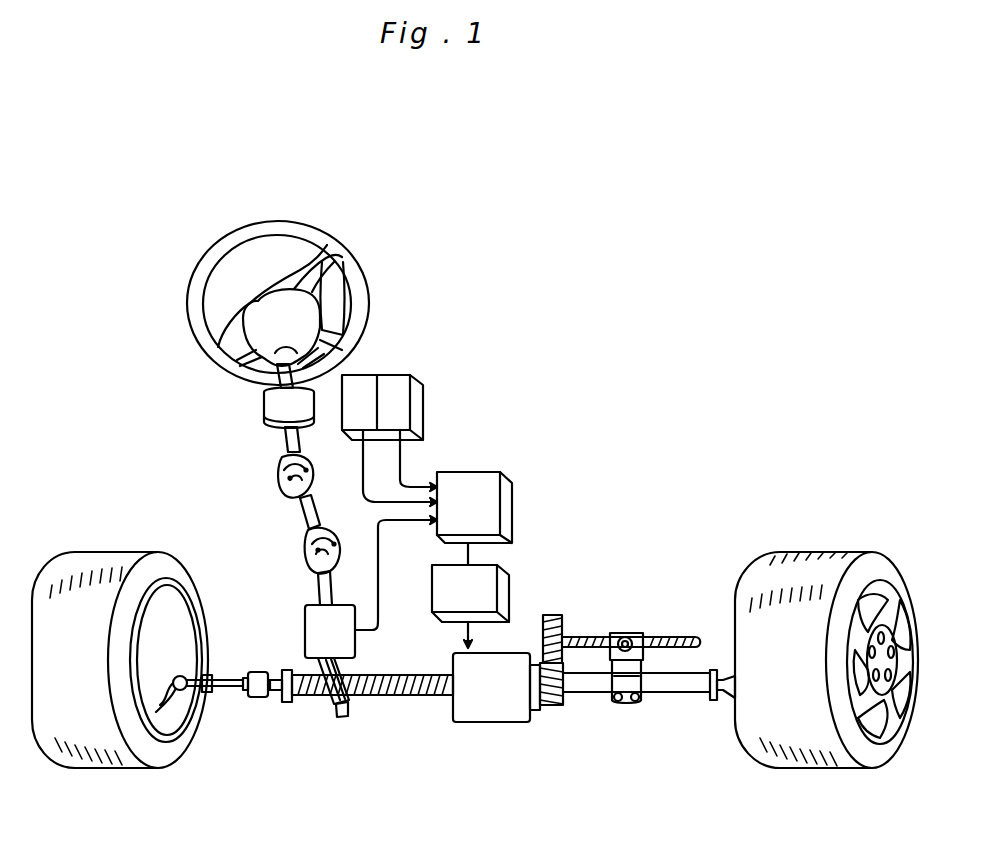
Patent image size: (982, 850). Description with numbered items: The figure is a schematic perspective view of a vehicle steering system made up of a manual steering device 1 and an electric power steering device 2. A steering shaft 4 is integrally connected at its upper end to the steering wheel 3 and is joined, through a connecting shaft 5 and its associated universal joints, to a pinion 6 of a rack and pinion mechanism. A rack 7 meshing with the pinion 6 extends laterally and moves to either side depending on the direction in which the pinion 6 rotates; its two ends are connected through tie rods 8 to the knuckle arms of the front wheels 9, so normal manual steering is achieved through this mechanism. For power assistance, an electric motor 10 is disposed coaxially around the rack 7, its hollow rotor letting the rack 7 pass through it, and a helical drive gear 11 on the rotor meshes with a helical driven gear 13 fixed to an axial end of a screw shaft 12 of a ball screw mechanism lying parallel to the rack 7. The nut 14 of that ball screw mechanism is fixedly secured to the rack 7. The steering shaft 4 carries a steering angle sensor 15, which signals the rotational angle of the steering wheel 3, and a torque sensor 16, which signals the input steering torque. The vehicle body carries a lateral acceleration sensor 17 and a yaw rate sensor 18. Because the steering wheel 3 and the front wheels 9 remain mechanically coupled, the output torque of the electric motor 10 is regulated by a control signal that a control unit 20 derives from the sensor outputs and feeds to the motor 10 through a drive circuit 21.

The manual steering device 1 is at (300, 655).
The electric power steering device 2 is at (641, 612).
The steering wheel 3 is at (366, 295).
The steering shaft 4 is at (285, 440).
The connecting shaft 5 is at (300, 520).
The pinion 6 is at (328, 704).
The rack 7 is at (398, 697).
The tie rods 8 is at (225, 690).
The front wheels 9 is at (115, 552).
The electric motor 10 is at (485, 722).
The helical drive gear 11 is at (555, 707).
The screw shaft 12 is at (680, 637).
The helical driven gear 13 is at (555, 615).
The nut 14 is at (617, 630).
The steering angle sensor 15 is at (266, 405).
The torque sensor 16 is at (357, 645).
The lateral acceleration sensor 17 is at (365, 375).
The yaw rate sensor 18 is at (408, 375).
The control unit 20 is at (513, 497).
The drive circuit 21 is at (503, 572).